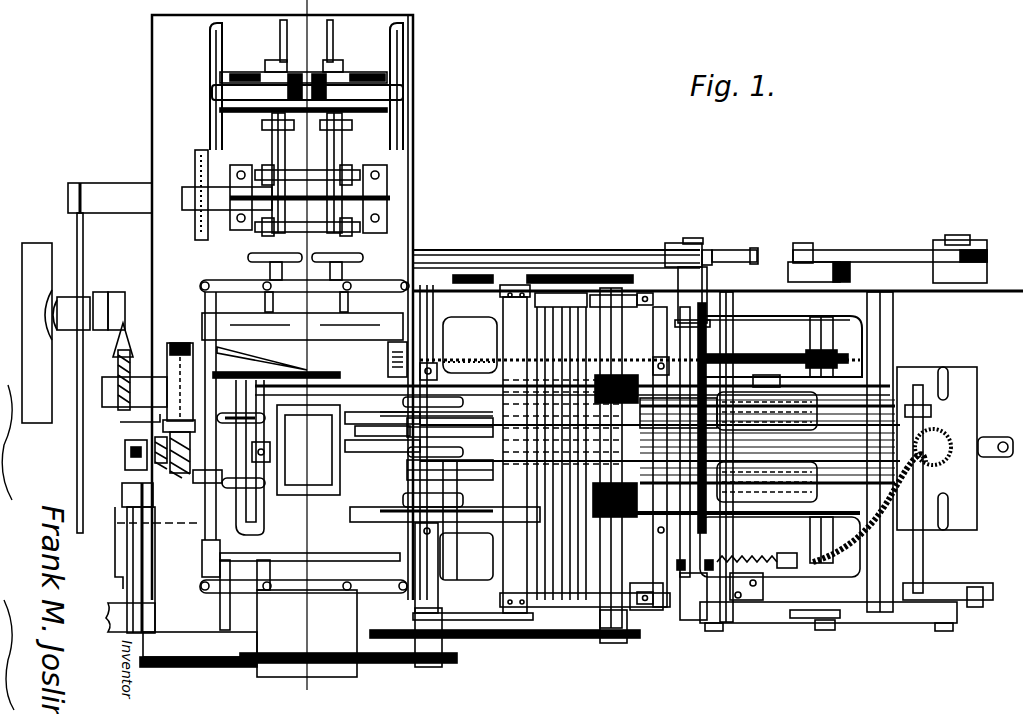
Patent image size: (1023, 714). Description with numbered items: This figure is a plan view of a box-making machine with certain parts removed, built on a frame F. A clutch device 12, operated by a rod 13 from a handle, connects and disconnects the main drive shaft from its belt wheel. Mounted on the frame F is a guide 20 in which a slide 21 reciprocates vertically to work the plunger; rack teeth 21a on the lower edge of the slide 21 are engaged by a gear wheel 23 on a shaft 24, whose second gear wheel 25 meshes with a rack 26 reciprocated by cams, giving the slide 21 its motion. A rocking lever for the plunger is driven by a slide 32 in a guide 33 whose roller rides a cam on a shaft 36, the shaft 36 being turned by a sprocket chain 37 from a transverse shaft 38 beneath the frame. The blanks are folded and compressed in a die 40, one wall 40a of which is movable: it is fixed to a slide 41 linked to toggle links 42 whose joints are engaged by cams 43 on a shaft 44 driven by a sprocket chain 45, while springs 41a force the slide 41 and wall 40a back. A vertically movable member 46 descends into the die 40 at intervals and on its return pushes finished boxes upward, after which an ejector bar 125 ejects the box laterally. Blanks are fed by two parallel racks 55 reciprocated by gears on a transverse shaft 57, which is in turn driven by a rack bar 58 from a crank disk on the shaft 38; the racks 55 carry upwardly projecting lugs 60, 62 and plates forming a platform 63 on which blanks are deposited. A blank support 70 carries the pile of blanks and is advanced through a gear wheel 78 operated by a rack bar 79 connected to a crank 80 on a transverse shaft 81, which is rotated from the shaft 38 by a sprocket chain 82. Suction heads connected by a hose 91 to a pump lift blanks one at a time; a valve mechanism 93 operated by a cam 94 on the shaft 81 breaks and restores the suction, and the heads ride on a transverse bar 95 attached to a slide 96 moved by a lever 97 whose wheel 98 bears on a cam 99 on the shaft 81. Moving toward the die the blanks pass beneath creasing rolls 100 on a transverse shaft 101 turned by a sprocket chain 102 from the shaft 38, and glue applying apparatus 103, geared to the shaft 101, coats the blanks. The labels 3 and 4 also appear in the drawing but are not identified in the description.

The frame F is at (416, 142).
The base 3 is at (107, 523).
The pedestal 4 is at (307, 677).
The clutch device 12 is at (84, 290).
The rod 13 is at (77, 438).
The guide 20 is at (125, 428).
The slide 21 is at (180, 455).
The rack teeth 21a is at (205, 540).
The gear wheel 23 is at (176, 343).
The shaft 24 is at (134, 392).
The second gear wheel 25 is at (118, 370).
The rack 26 is at (125, 335).
The slide 32 is at (125, 455).
The guide 33 is at (128, 464).
The shaft 36 is at (122, 492).
The sprocket chain 37 is at (375, 665).
The shaft 38 is at (430, 667).
The die 40 is at (335, 450).
The movable wall 40a is at (330, 355).
The slide 41 is at (360, 315).
The springs 41a is at (408, 355).
The toggle links 42 is at (272, 150).
The cams 43 is at (241, 230).
The shaft 44 is at (303, 195).
The sprocket chain 45 is at (196, 170).
The vertically movable member 46 is at (304, 395).
The racks 55 is at (668, 465).
The transverse shaft 57 is at (712, 380).
The rack bar 58 is at (733, 252).
The lug 60 is at (410, 431).
The lug 62 is at (845, 420).
The platform 63 is at (780, 400).
The blank support 70 is at (965, 420).
The gear wheel 78 is at (982, 245).
The rack bar 79 is at (880, 252).
The crank 80 is at (788, 271).
The transverse shaft 81 is at (812, 338).
The sprocket chain 82 is at (752, 358).
The hose 91 is at (860, 540).
The valve mechanism 93 is at (752, 558).
The cam 94 is at (800, 565).
The transverse bar 95 is at (923, 535).
The slide 96 is at (975, 607).
The lever 97 is at (902, 623).
The wheel 98 is at (820, 630).
The cam 99 is at (792, 618).
The creasing rolls 100 is at (625, 370).
The transverse shaft 101 is at (620, 287).
The sprocket chain 102 is at (508, 640).
The glue applying apparatus 103 is at (555, 398).
The ejector bar 125 is at (268, 350).